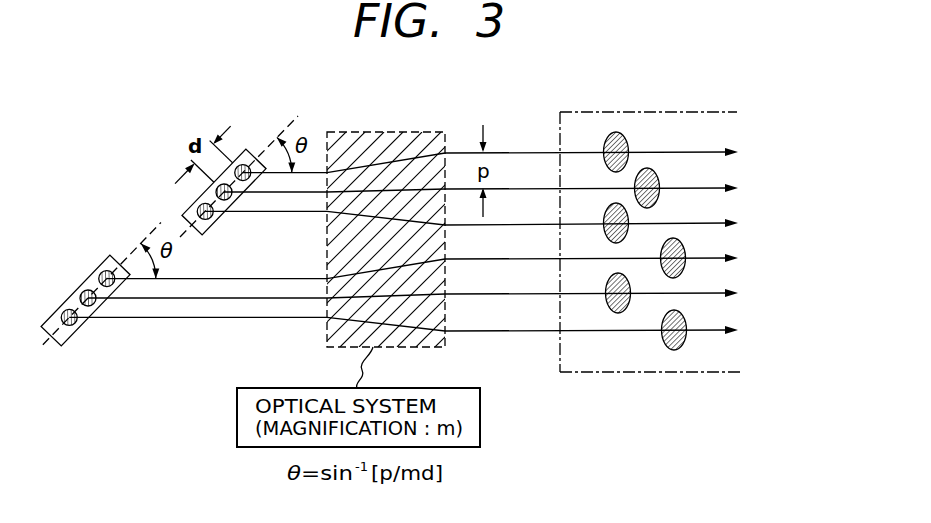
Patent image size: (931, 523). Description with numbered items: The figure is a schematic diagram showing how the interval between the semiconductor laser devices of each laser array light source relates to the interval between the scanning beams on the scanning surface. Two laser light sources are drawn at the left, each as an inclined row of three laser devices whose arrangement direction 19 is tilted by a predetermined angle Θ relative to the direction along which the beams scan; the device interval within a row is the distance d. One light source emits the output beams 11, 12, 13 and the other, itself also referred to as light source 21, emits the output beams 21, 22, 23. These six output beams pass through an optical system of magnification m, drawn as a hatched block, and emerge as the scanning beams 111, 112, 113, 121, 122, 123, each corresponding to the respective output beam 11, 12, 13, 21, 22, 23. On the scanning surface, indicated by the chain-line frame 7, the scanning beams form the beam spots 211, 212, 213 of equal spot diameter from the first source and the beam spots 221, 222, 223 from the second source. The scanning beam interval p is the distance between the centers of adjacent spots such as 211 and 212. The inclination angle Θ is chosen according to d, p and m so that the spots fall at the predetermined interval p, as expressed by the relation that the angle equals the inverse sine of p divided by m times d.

The photosensitive member surface 7 is at (722, 111).
The arrangement direction 19 is at (297, 115).
The output beam 11 is at (305, 174).
The output beam 12 is at (270, 193).
The output beam 13 is at (238, 212).
The output beam 21 is at (190, 206).
The output beam 22 is at (93, 272).
The output beam 23 is at (163, 318).
The scanning beam 111 is at (700, 152).
The scanning beam 112 is at (700, 188).
The scanning beam 113 is at (700, 223).
The scanning beam 121 is at (700, 258).
The scanning beam 122 is at (700, 293).
The scanning beam 123 is at (700, 330).
The beam spot 211 is at (616, 132).
The beam spot 212 is at (648, 169).
The beam spot 213 is at (606, 214).
The light spot 221 is at (664, 277).
The light spot 222 is at (611, 311).
The light spot 223 is at (676, 350).